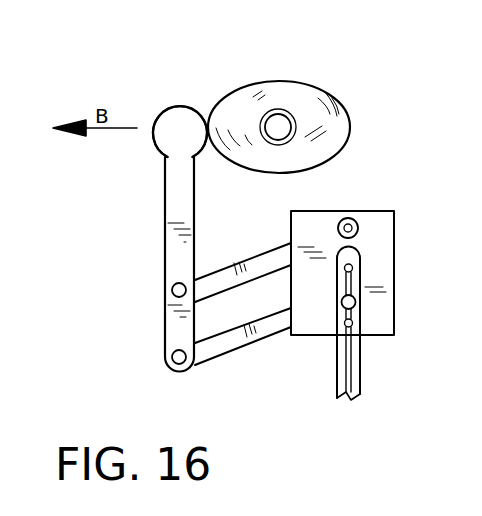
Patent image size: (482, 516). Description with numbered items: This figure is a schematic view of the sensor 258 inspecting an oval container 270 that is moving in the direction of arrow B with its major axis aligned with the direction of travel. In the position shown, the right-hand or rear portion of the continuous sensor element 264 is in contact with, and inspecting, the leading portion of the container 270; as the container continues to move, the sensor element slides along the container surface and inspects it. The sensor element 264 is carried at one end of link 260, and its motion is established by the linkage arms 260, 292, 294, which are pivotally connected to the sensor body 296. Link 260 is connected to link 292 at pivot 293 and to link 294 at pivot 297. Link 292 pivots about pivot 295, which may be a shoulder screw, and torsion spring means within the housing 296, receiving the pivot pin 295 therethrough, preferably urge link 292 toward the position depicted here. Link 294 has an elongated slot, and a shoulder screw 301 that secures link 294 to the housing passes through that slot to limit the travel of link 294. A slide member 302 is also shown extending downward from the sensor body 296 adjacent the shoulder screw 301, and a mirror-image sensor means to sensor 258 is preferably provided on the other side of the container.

The sensor 258 is at (134, 238).
The link 260 is at (183, 170).
The sensor element 264 is at (180, 107).
The oval container 270 is at (337, 76).
The link 292 is at (208, 278).
The pivot 293 is at (172, 291).
The link 294 is at (212, 348).
The pivot 295 is at (348, 213).
The sensor body 296 is at (380, 283).
The pivot 297 is at (168, 357).
The shoulder screw 301 is at (356, 302).
The slide bar 302 is at (355, 378).